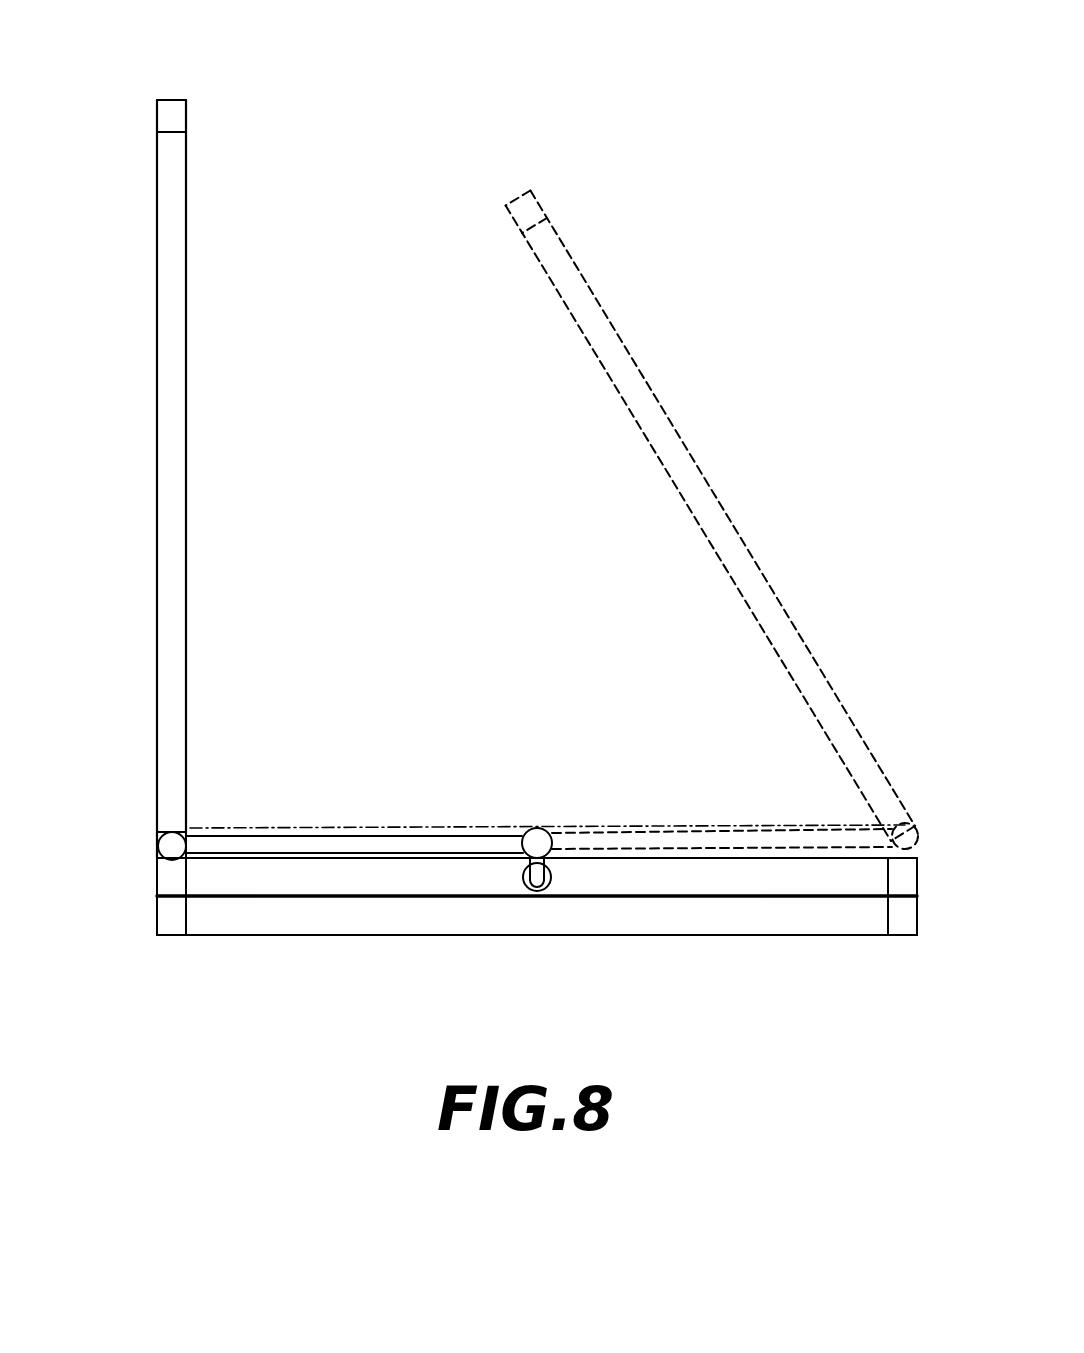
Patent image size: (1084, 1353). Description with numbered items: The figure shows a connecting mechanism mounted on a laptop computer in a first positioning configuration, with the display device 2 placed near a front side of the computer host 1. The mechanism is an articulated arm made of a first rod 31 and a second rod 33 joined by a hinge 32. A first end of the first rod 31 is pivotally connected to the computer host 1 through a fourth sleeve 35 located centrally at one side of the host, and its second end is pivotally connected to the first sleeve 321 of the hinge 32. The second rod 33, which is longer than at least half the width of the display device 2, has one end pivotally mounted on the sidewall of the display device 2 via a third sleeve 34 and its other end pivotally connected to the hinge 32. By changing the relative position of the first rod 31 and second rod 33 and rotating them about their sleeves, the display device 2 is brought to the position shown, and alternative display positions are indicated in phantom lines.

The computer host 1 is at (637, 917).
The display device 2 is at (167, 117).
The first rod 31 is at (543, 883).
The hinge 32 is at (520, 892).
The first sleeve 321 is at (530, 848).
The second rod 33 is at (352, 845).
The third sleeve 34 is at (160, 858).
The fourth sleeve 35 is at (545, 888).